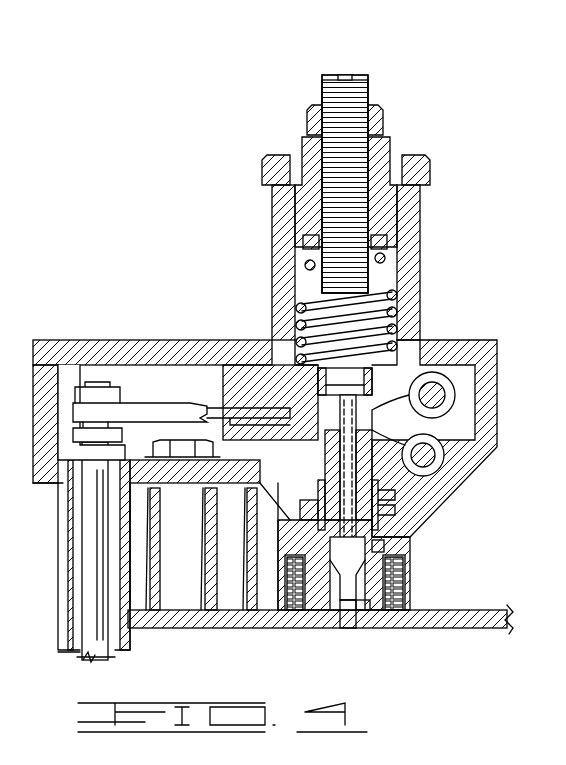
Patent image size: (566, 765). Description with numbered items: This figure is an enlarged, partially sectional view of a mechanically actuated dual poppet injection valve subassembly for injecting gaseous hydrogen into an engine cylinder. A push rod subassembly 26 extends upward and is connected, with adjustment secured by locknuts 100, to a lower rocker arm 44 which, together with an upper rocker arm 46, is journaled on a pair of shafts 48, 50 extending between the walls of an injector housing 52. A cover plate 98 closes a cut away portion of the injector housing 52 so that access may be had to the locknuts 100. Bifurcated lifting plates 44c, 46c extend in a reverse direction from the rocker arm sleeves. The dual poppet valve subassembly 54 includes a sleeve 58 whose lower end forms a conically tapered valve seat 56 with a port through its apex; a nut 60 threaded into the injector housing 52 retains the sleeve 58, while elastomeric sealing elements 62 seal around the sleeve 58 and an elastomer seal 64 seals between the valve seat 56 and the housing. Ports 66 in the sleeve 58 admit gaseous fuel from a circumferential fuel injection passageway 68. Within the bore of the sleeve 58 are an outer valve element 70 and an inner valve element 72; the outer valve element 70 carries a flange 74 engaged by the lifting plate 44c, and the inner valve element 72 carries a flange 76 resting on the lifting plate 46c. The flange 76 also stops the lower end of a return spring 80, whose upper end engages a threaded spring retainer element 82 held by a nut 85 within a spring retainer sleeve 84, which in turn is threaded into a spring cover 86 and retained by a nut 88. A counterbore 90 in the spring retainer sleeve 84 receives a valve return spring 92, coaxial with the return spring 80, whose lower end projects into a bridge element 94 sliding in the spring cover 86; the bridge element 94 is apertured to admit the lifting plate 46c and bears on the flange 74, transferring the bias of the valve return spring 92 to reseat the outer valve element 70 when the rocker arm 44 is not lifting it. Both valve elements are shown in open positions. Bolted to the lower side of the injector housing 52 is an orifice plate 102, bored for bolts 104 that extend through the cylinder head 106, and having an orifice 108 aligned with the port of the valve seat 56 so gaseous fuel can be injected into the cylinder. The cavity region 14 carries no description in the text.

The cavity 14 is at (208, 570).
The push rod subassembly 26 is at (80, 520).
The rocker arm 44 is at (160, 405).
The bifurcated lifting plate 44c is at (400, 485).
The rocker arm 46 is at (210, 400).
The bifurcated lifting plate 46c is at (194, 441).
The shaft 48 is at (434, 382).
The shaft 50 is at (445, 462).
The injector housing 52 is at (505, 384).
The dual poppet valve subassembly 54 is at (380, 528).
The conically tapered valve seat 56 is at (332, 625).
The sleeve 58 is at (325, 465).
The nut 60 is at (396, 505).
The elastomeric sealing elements 62 is at (384, 545).
The elastomer seal 64 is at (365, 622).
The ports 66 is at (290, 570).
The circumferential fuel injection passageway 68 is at (403, 584).
The outer valve element 70 is at (318, 485).
The inner valve element 72 is at (305, 515).
The flange 74 is at (318, 440).
The flange 76 is at (318, 380).
The return spring 80 is at (368, 297).
The spring retainer element 82 is at (360, 75).
The spring retainer sleeve 84 is at (390, 148).
The nut 85 is at (383, 112).
The spring cover 86 is at (420, 222).
The nut 88 is at (430, 170).
The counterbore 90 is at (312, 238).
The valve return spring 92 is at (308, 268).
The bridge element 94 is at (422, 340).
The cover plate 98 is at (90, 340).
The locknuts 100 is at (72, 395).
The orifice plate 102 is at (312, 628).
The bolts 104 is at (290, 626).
The cylinder head 106 is at (472, 626).
The orifice 108 is at (350, 628).